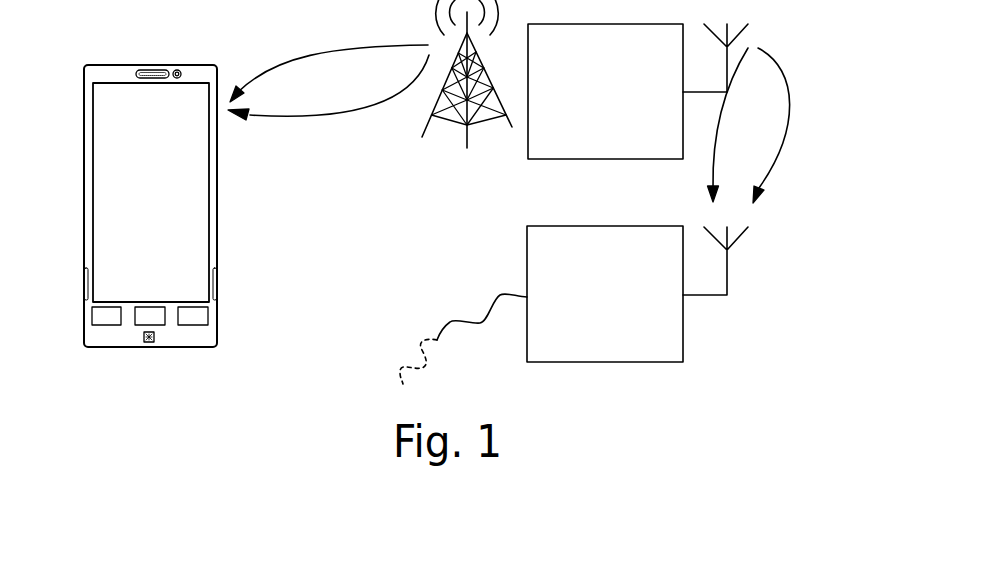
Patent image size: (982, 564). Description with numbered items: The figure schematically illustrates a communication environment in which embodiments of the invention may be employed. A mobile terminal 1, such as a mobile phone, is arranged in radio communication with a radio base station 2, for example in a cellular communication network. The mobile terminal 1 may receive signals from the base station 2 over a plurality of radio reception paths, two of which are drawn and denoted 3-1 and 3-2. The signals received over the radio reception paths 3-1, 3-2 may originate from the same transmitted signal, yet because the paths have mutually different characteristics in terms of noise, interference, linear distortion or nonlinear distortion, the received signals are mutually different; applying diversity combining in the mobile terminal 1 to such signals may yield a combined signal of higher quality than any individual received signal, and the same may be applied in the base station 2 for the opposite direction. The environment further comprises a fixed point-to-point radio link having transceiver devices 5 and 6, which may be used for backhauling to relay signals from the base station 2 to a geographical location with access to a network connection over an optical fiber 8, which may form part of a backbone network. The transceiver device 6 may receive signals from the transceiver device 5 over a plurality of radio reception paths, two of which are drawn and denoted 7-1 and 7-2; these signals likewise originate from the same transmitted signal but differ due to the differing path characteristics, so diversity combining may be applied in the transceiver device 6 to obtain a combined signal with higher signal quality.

The mobile terminal 1 is at (85, 253).
The radio base station 2 is at (450, 118).
The radio reception path 3-1 is at (304, 58).
The radio reception path 3-2 is at (337, 118).
The transceiver device 5 is at (599, 130).
The transceiver device 6 is at (598, 332).
The radio reception path 7-1 is at (713, 163).
The radio reception path 7-2 is at (785, 131).
The optical fiber 8 is at (468, 320).